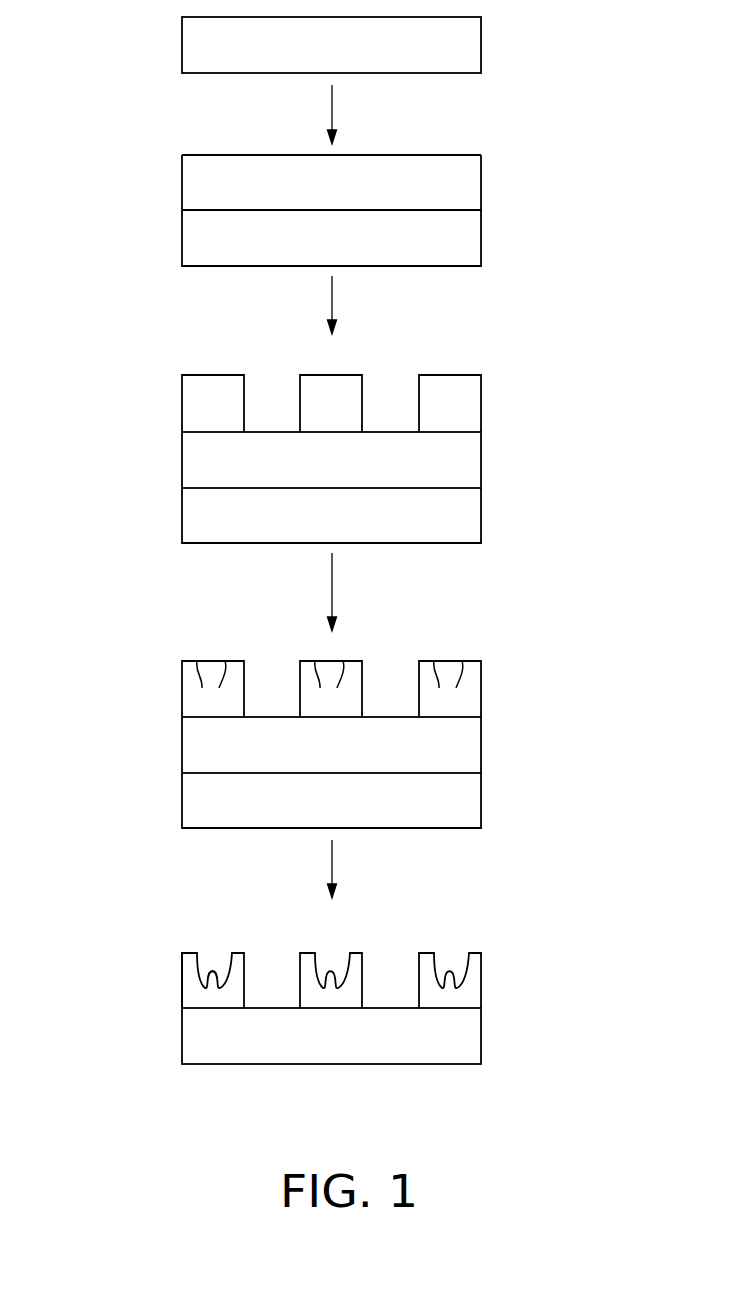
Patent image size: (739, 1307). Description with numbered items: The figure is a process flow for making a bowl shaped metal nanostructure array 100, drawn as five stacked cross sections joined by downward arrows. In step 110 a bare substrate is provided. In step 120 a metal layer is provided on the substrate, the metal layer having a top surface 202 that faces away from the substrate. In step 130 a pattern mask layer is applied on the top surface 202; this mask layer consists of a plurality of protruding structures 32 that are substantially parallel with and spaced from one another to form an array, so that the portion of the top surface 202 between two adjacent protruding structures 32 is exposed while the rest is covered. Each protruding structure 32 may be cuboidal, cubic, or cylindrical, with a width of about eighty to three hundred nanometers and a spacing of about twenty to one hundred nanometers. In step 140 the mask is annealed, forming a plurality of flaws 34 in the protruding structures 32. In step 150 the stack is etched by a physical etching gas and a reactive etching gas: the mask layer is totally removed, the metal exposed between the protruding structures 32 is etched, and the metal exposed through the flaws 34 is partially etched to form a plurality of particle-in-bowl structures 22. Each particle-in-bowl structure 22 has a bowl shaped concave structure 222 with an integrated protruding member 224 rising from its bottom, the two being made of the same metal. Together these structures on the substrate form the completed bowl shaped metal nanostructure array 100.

The top surface 202 is at (448, 153).
The protruding structures 32 is at (207, 700).
The flaws 34 is at (462, 673).
The particle-in-bowl structures 22 is at (467, 1000).
The bowl shaped concave structure 222 is at (195, 998).
The protruding member 224 is at (211, 969).
The bowl shaped metal nanostructure array 100 is at (353, 978).
The step of providing a substrate 110 is at (333, 45).
The step of providing a metal layer 120 is at (319, 188).
The step of applying a pattern mask layer 130 is at (318, 448).
The step of annealing and forming flaws 140 is at (319, 732).
The step of etching 150 is at (332, 978).